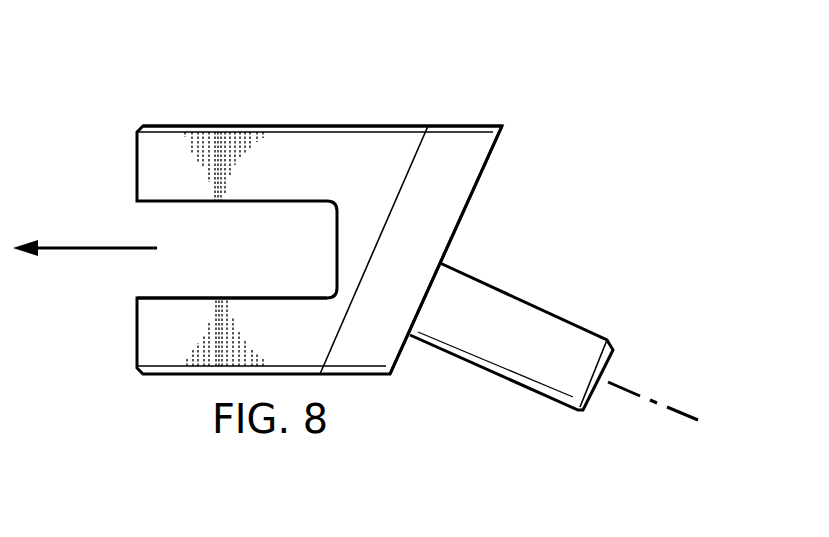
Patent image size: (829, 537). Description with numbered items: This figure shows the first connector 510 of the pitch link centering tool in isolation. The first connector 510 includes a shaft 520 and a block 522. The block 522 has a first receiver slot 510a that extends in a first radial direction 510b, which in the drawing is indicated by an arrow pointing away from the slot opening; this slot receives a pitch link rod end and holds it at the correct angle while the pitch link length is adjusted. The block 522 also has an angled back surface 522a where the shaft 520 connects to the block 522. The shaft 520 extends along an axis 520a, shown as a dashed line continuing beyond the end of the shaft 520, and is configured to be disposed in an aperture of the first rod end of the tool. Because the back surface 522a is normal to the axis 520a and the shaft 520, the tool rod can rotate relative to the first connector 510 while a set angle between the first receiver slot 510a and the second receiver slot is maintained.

The first connector 510 is at (172, 84).
The first receiver slot 510a is at (157, 297).
The first radial direction 510b is at (97, 246).
The block 522 is at (300, 126).
The back surface 522a is at (478, 185).
The shaft 520 is at (527, 300).
The axis 520a is at (708, 390).